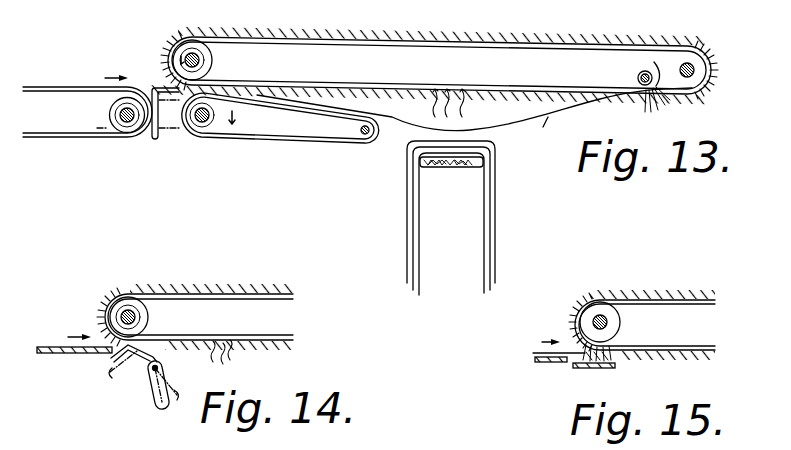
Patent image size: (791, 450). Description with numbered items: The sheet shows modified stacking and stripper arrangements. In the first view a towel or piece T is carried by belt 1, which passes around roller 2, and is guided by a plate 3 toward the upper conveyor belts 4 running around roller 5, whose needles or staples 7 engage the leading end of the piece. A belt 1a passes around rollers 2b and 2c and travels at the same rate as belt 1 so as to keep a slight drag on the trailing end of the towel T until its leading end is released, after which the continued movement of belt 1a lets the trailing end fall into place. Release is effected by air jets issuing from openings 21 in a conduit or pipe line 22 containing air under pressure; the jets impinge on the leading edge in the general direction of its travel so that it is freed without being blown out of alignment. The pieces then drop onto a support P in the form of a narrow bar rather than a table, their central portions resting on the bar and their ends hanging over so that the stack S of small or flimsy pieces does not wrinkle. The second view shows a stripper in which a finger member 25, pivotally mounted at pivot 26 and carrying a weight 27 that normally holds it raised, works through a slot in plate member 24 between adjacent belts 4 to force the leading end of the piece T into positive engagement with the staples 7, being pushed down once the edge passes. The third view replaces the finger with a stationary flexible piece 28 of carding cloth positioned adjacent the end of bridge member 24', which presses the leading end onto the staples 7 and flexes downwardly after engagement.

In FIG. 13, the belt 1 is at (57, 92).
In FIG. 13, the roller 2 is at (108, 113).
In FIG. 13, the guide plate 3 is at (158, 140).
In FIG. 13, the belts 4 is at (338, 41).
In FIG. 14, the belts 4 is at (228, 299).
In FIG. 15, the belts 4 is at (673, 305).
In FIG. 13, the roller 5 is at (213, 57).
In FIG. 14, the roller 5 is at (148, 312).
In FIG. 13, the staples 7 is at (449, 110).
In FIG. 14, the staples 7 is at (221, 360).
In FIG. 13, the belt 1a is at (276, 141).
In FIG. 13, the roller 2b is at (209, 133).
In FIG. 13, the roller 2c is at (353, 137).
In FIG. 13, the openings 21 is at (649, 68).
In FIG. 13, the conduit or pipe line 22 is at (637, 77).
In FIG. 14, the plate member 24 is at (65, 369).
In FIG. 15, the bridge member 24' is at (531, 365).
In FIG. 14, the finger member 25 is at (112, 358).
In FIG. 14, the pivot 26 is at (160, 368).
In FIG. 14, the weight 27 is at (157, 402).
In FIG. 15, the flexible piece of carding cloth 28 is at (615, 365).
In FIG. 13, the towel or piece T is at (45, 87).
In FIG. 14, the towel or piece T is at (64, 332).
In FIG. 15, the towel or piece T is at (551, 342).
In FIG. 13, the support P is at (440, 168).
In FIG. 13, the stack S is at (490, 208).